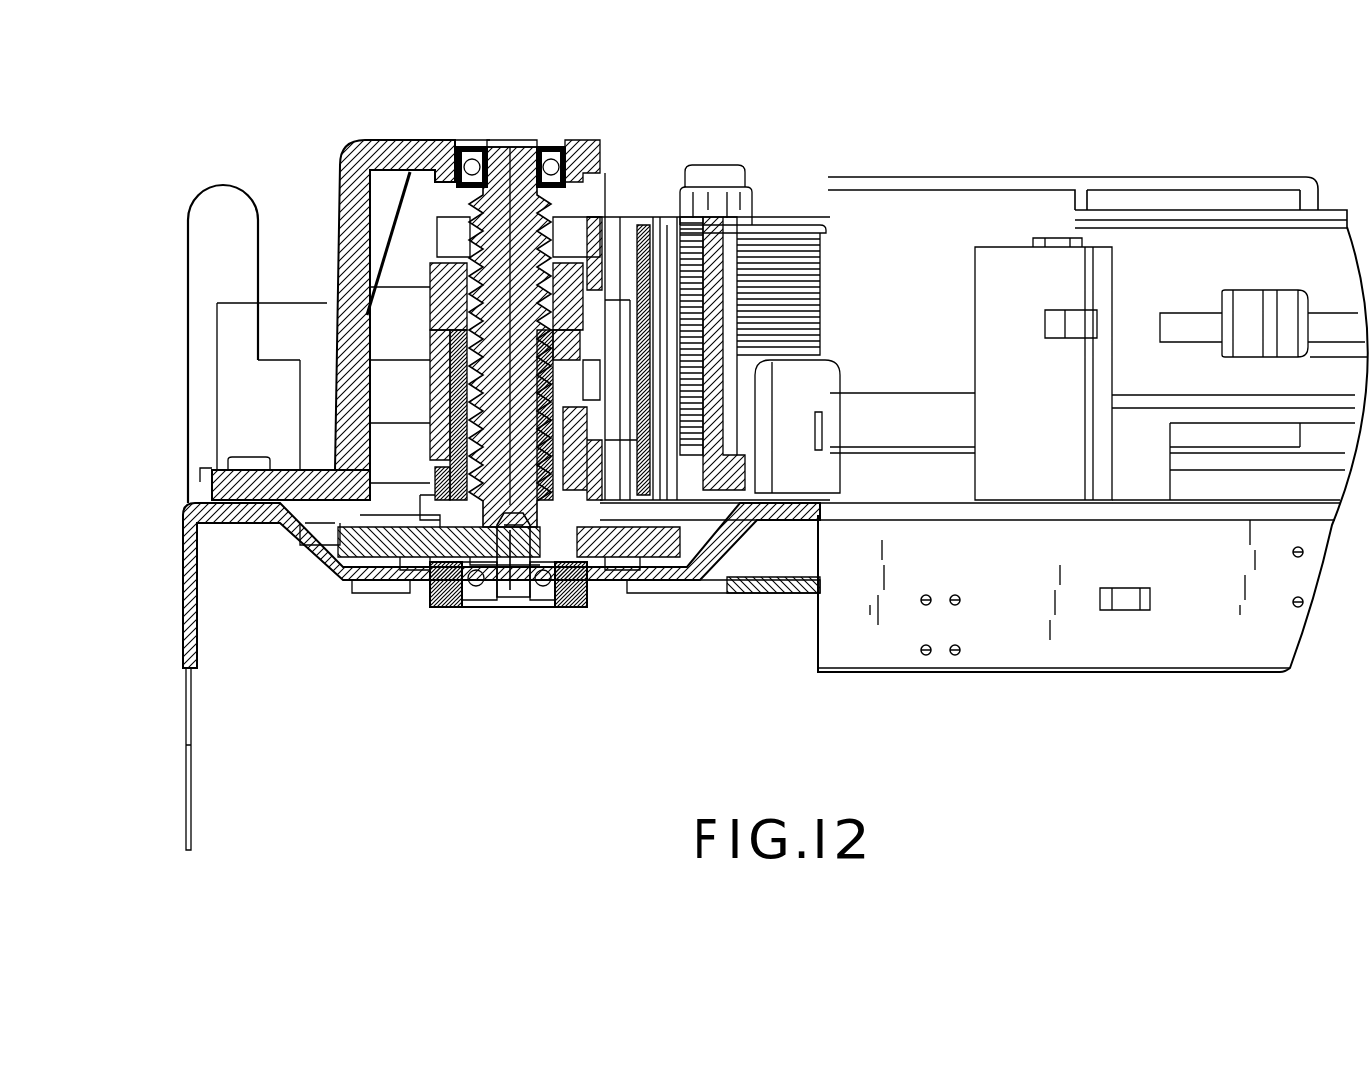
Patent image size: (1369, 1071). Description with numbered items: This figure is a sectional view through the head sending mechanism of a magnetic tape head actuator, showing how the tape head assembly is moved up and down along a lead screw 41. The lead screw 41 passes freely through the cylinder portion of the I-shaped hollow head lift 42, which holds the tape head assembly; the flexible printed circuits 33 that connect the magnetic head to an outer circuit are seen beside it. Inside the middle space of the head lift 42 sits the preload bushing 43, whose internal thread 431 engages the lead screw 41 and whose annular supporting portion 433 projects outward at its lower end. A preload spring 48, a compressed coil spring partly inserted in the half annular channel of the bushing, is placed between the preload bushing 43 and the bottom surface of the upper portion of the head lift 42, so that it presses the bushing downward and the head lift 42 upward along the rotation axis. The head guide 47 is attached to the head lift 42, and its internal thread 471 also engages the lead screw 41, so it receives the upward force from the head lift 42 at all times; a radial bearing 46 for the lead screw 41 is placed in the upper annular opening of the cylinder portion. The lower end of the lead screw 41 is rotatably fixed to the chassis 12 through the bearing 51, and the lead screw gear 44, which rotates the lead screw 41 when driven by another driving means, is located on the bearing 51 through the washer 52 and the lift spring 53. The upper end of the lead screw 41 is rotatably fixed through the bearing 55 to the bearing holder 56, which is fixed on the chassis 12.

The chassis 12 is at (330, 577).
The flexible printed circuits 33 is at (202, 193).
The lead screw 41 is at (587, 250).
The head lift 42 is at (399, 170).
The preload bushing 43 is at (585, 355).
The lead screw gear 44 is at (580, 600).
The radial bearing 46 is at (456, 217).
The head guide 47 is at (563, 593).
The preload spring 48 is at (280, 470).
The bearing 51 is at (537, 595).
The washer 52 is at (440, 595).
The lift spring 53 is at (413, 580).
The bearing 55 is at (545, 150).
The bearing holder 56 is at (407, 170).
The internal thread 431 is at (440, 400).
The annular supporting portion 433 is at (440, 372).
The internal thread 471 is at (440, 452).